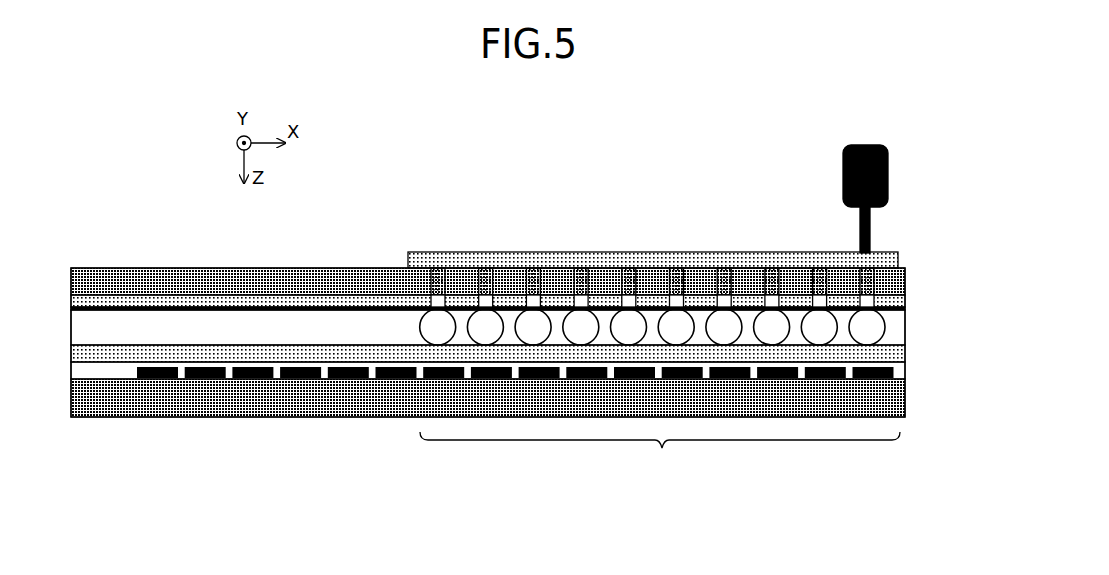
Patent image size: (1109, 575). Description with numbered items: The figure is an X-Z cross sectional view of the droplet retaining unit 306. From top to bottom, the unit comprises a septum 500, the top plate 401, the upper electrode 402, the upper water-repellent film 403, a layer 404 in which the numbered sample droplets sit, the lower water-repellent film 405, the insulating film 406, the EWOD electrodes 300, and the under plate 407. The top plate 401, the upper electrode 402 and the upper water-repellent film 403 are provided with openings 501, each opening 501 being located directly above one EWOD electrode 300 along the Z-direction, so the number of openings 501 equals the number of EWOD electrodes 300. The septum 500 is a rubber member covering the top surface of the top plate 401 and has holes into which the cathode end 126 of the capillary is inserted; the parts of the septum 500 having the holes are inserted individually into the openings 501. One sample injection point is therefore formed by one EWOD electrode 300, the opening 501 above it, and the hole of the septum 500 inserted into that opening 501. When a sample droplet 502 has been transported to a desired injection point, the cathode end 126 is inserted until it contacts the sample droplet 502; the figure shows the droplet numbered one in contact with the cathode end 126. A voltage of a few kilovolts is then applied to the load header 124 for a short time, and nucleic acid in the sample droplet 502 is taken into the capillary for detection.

The load header 124 is at (888, 178).
The cathode end 126 is at (870, 224).
The EWOD electrode 300 is at (158, 417).
The droplet retaining unit 306 is at (660, 458).
The top plate 401 is at (905, 283).
The upper electrode 402 is at (905, 300).
The upper water-repellent film 403 is at (905, 309).
The fourth layer 404 is at (905, 330).
The lower water-repellent film 405 is at (905, 352).
The insulating film 406 is at (905, 370).
The under plate 407 is at (905, 400).
The septum 500 is at (898, 258).
The opening 501 is at (440, 268).
The sample droplet 502 is at (848, 274).